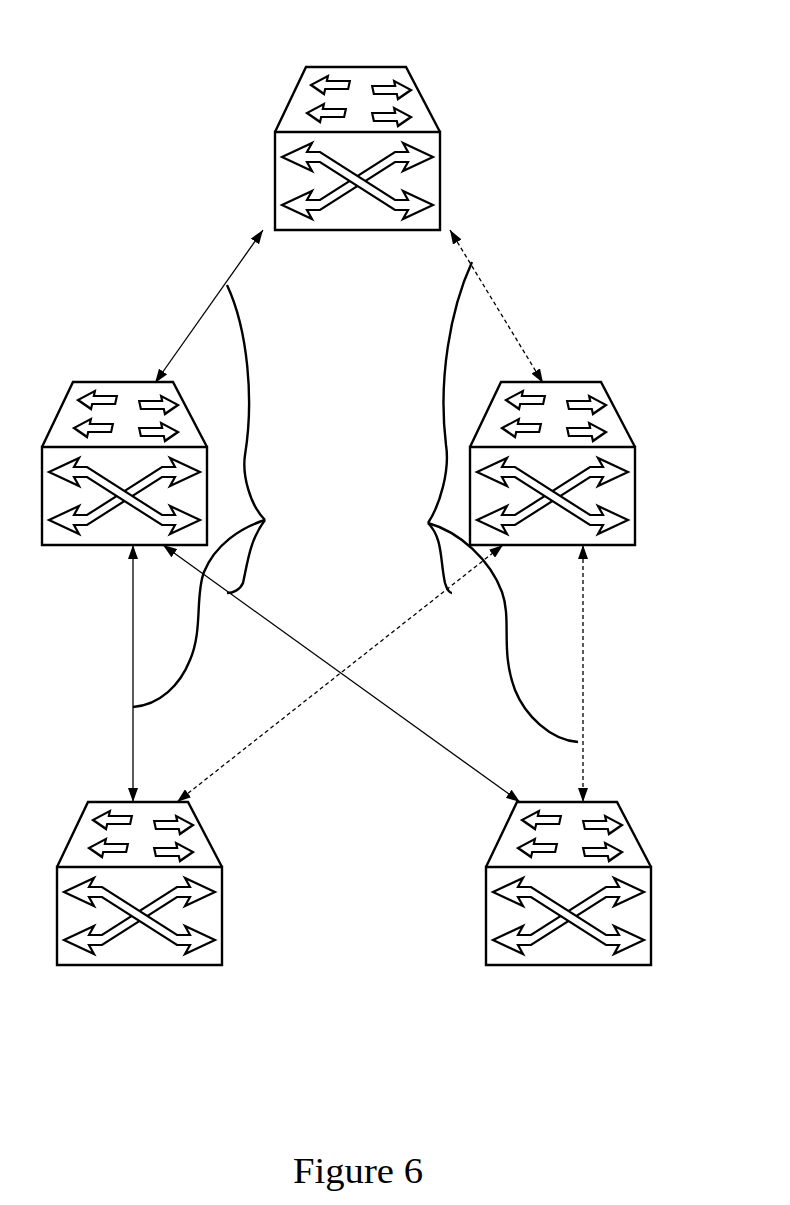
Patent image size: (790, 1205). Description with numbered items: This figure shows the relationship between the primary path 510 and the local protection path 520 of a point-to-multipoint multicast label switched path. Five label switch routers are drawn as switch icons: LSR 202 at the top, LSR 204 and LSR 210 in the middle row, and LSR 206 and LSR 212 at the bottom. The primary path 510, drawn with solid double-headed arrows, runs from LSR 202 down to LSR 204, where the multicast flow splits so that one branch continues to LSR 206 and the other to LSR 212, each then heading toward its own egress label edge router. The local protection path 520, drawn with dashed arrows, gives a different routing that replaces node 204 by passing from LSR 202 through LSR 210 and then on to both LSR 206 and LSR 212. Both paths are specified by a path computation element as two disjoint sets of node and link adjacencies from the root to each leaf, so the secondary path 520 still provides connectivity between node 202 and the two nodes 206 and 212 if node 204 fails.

The LSR 202 is at (361, 66).
The LSR 204 is at (93, 382).
The LSR 206 is at (615, 801).
The LSR 210 is at (557, 382).
The LSR 212 is at (140, 801).
The primary path 510 is at (222, 496).
The local protection path 520 is at (481, 502).